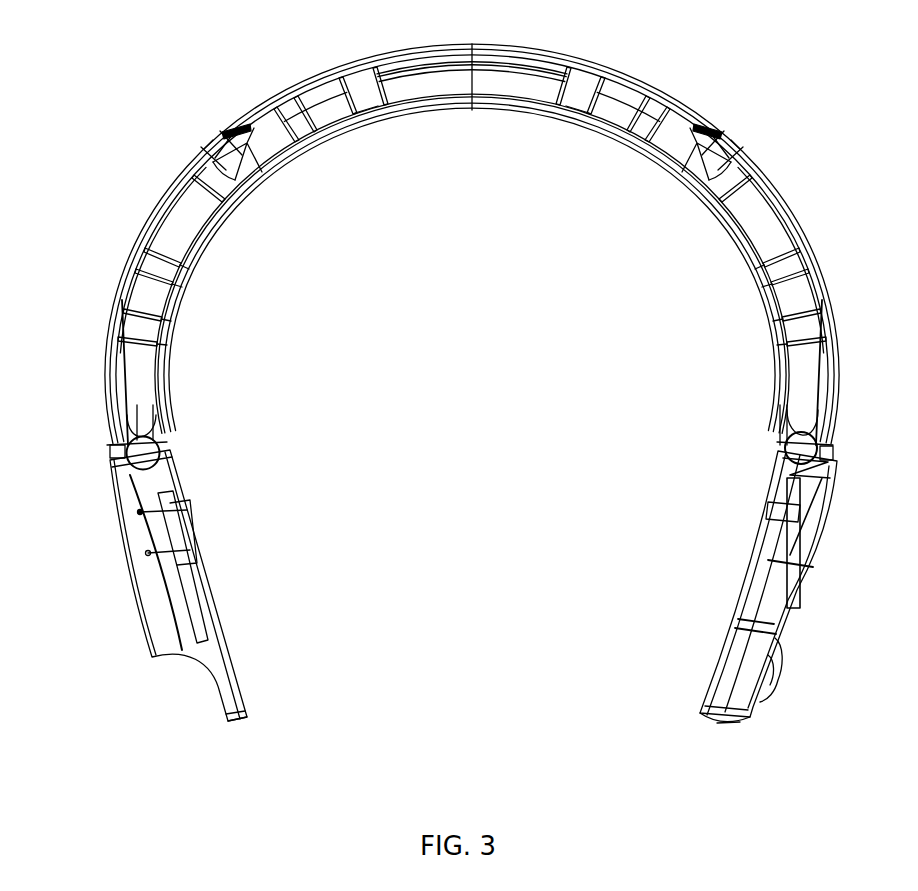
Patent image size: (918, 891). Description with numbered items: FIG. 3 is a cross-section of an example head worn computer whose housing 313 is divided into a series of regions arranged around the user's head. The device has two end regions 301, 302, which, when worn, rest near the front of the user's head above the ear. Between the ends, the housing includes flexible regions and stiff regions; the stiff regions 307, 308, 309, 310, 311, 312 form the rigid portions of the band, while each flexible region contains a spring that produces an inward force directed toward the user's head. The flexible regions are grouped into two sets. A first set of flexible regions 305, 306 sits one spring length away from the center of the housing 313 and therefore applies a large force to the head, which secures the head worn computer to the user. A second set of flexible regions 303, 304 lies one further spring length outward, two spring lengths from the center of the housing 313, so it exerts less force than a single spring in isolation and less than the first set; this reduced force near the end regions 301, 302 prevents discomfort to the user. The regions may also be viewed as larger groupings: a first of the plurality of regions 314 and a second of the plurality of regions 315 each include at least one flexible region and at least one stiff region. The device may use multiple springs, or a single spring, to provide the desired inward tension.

The end region 301 is at (233, 723).
The end region 302 is at (738, 723).
The flexible region 303 is at (178, 446).
The flexible region 304 is at (758, 447).
The flexible region 305 is at (256, 189).
The flexible region 306 is at (688, 189).
The stiff region 307 is at (185, 300).
The stiff region 308 is at (765, 300).
The stiff region 309 is at (345, 127).
The stiff region 310 is at (607, 127).
The stiff region 311 is at (190, 530).
The stiff region 312 is at (752, 562).
The housing 313 is at (470, 120).
The first of the plurality of regions 314 is at (95, 415).
The second of the plurality of regions 315 is at (95, 105).